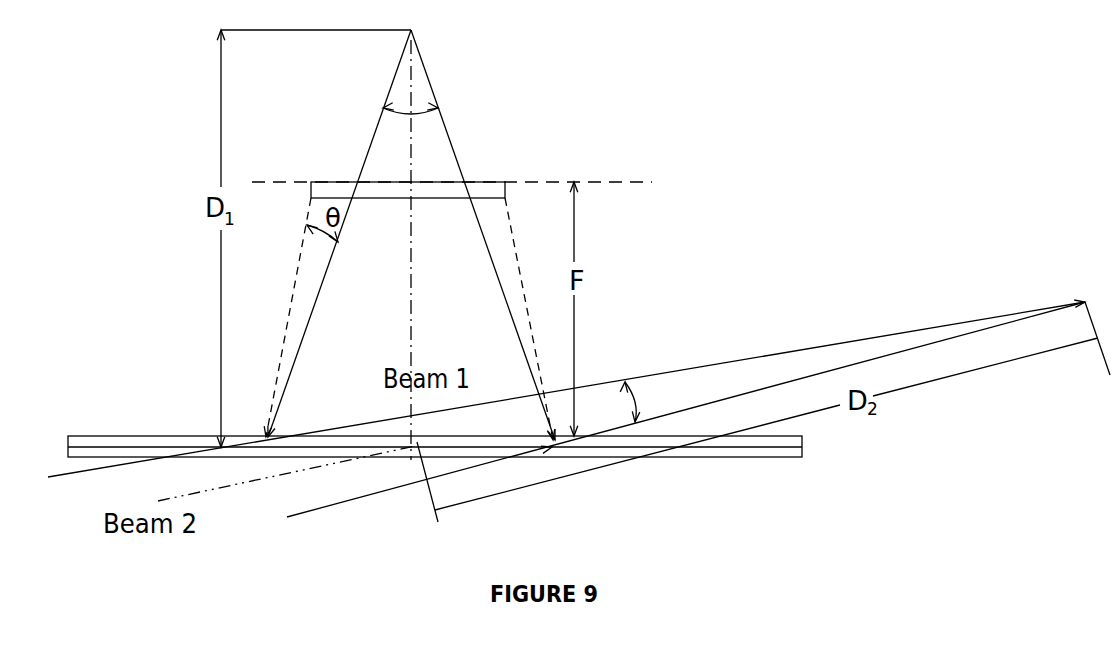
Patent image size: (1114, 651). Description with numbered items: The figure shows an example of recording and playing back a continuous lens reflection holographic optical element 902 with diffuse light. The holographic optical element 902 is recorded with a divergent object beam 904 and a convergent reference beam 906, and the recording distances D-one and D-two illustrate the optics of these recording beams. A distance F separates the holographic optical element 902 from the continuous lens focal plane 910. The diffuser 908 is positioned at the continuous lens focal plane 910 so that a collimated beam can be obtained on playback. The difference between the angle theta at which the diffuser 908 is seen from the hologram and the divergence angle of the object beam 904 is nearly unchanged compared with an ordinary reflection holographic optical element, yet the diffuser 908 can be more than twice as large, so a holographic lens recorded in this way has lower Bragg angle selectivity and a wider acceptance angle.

The continuous lens reflection holographic optical element 902 is at (727, 449).
The divergent object beam 904 is at (423, 110).
The convergent reference beam 906 is at (620, 407).
The diffuser 908 is at (483, 182).
The continuous lens focal plane 910 is at (622, 182).